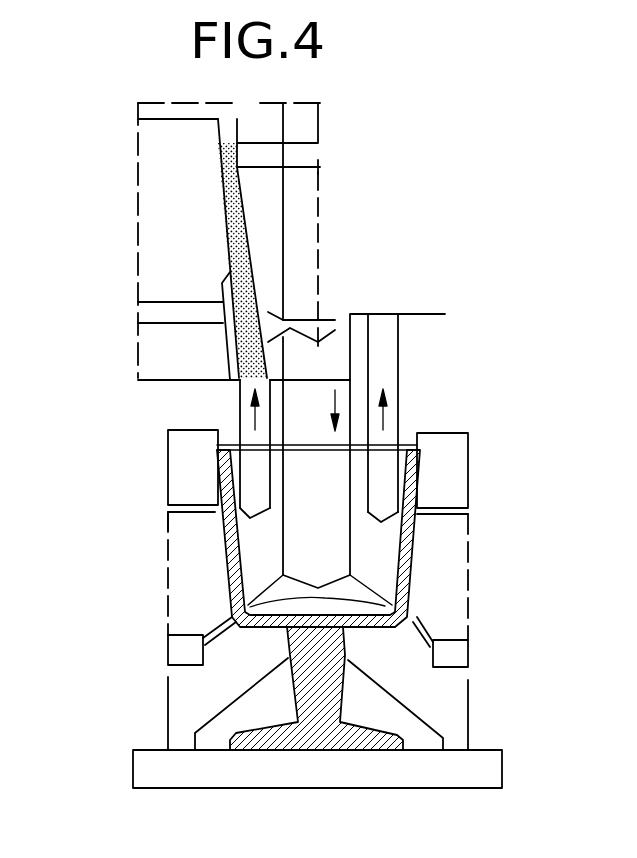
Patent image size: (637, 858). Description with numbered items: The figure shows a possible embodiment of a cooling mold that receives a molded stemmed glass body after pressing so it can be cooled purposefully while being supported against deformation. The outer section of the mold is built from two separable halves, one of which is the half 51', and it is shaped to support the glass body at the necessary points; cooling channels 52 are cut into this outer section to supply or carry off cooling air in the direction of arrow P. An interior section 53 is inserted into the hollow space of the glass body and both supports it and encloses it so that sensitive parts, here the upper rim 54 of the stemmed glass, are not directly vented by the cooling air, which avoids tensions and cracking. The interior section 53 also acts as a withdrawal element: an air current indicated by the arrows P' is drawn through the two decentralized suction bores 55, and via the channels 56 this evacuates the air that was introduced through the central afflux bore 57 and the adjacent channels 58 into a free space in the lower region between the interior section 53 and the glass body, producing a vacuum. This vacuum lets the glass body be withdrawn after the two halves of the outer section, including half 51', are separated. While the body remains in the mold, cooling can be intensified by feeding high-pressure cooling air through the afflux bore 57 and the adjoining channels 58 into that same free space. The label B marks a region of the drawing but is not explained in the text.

The outer section half 51' is at (317, 783).
The cooling channels 52 is at (193, 636).
The interior section 53 is at (420, 484).
The upper rim 54 is at (226, 178).
The decentralized suction bores 55 is at (215, 468).
The channels 56 is at (243, 518).
The central afflux bore 57 is at (338, 535).
The adjacent channels 58 is at (348, 630).
The blocking body B is at (253, 470).
The arrow indicating cooling air P is at (309, 558).
The arrows indicating air current P' is at (315, 373).